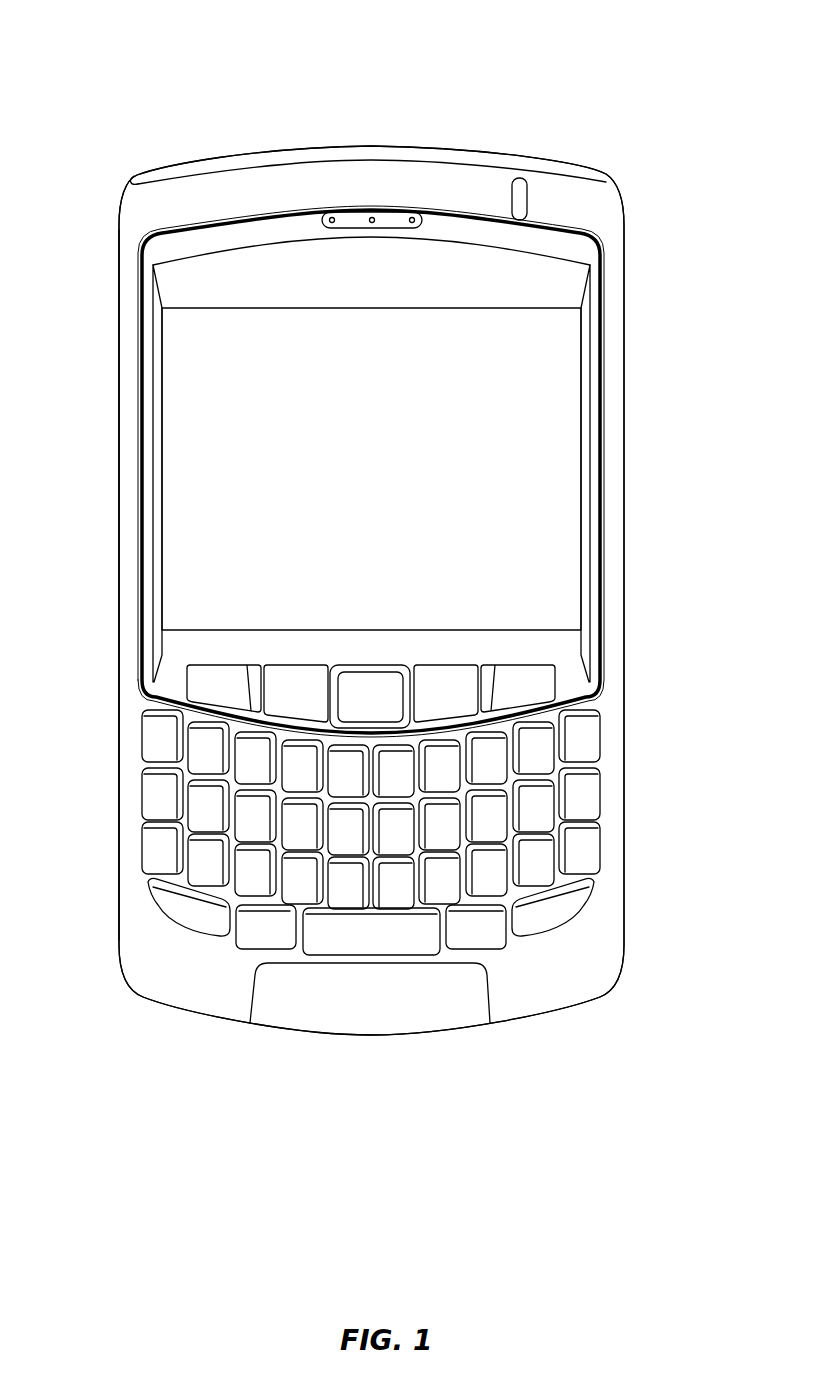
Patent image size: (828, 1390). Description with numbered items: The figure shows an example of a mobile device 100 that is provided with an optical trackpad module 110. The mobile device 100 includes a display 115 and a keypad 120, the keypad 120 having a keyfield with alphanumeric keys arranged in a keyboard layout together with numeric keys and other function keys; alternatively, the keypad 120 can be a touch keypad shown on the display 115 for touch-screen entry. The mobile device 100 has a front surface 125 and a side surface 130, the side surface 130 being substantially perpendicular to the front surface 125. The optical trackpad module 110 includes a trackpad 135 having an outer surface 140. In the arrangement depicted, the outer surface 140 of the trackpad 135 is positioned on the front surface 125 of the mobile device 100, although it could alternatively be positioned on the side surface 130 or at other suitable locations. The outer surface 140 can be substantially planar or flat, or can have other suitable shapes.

The mobile device 100 is at (163, 49).
The optical trackpad module 110 is at (325, 693).
The display 115 is at (538, 502).
The keypad 120 is at (626, 832).
The front surface 125 is at (590, 205).
The side surface 130 is at (120, 402).
The trackpad 135 is at (413, 660).
The outer surface 140 is at (365, 698).